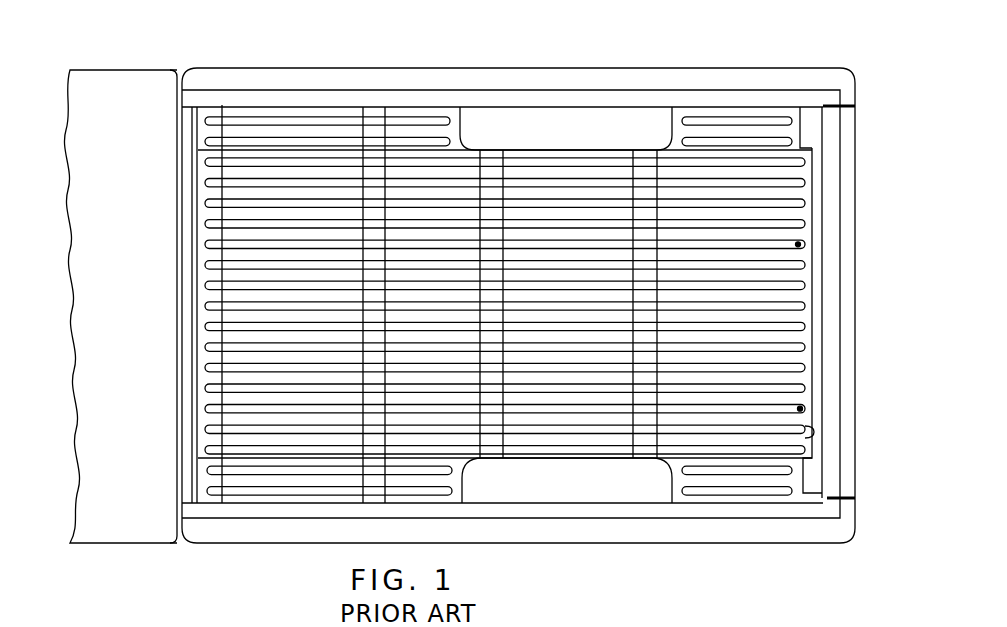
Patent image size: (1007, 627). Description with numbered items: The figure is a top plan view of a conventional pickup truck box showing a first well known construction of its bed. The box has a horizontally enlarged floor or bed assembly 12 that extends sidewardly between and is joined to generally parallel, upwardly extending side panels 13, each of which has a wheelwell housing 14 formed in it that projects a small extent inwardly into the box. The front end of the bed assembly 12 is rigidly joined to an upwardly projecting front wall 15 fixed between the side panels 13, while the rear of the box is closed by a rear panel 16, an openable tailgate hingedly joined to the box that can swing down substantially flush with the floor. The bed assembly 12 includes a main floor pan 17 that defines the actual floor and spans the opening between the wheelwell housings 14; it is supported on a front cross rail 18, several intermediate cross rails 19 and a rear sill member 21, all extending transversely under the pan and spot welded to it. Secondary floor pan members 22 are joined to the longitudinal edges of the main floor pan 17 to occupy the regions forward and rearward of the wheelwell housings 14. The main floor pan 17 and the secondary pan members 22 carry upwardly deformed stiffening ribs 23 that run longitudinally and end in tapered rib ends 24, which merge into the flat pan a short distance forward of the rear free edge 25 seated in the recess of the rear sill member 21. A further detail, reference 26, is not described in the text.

The floor or bed assembly 12 is at (556, 328).
The side panel 13 is at (492, 48).
The wheelwell housing 14 is at (578, 118).
The front wall or panel 15 is at (188, 467).
The rear panel or tailgate 16 is at (838, 262).
The main bed member or floor pan 17 is at (556, 328).
The front cross rail 18 is at (207, 112).
The intermediate cross rail 19 is at (373, 130).
The rear cross rail or sill member 21 is at (815, 125).
The secondary bed or floor pan member 22 is at (248, 125).
The stiffening rib 23 is at (790, 242).
The tapered rib end 24 is at (798, 244).
The rear free edge 25 is at (812, 163).
The connector 26 is at (810, 434).